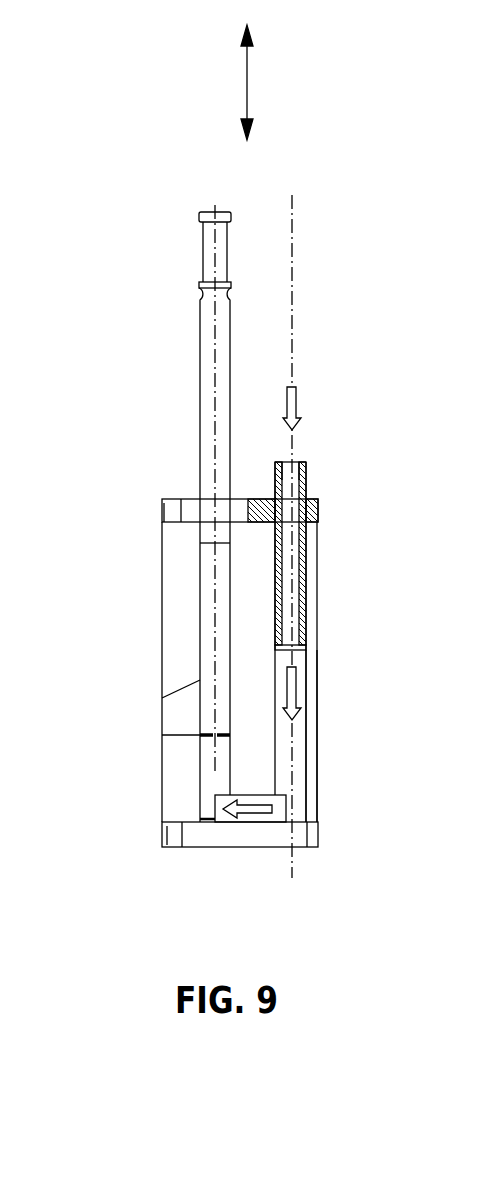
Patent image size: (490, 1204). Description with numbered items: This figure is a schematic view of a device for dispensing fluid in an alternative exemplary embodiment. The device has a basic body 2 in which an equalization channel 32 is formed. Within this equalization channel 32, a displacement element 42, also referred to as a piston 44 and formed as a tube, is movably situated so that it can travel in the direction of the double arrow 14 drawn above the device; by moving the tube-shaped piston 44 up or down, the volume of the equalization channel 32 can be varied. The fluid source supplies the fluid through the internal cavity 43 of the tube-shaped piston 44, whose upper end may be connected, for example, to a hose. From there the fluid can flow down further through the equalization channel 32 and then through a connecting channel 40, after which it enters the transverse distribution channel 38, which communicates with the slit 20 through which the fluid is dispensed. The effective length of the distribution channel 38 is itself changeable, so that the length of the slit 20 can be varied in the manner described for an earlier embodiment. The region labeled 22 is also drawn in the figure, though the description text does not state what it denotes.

The basic body 2 is at (208, 867).
The double arrow 14 is at (247, 83).
The slit 20 is at (170, 791).
The chamber 22 is at (160, 757).
The equalization channel 32 is at (302, 755).
The transverse distribution channel 38 is at (208, 816).
The connecting channel 40 is at (248, 818).
The displacement element 42 is at (347, 553).
The internal cavity 43 is at (295, 487).
The piston 44 is at (297, 565).